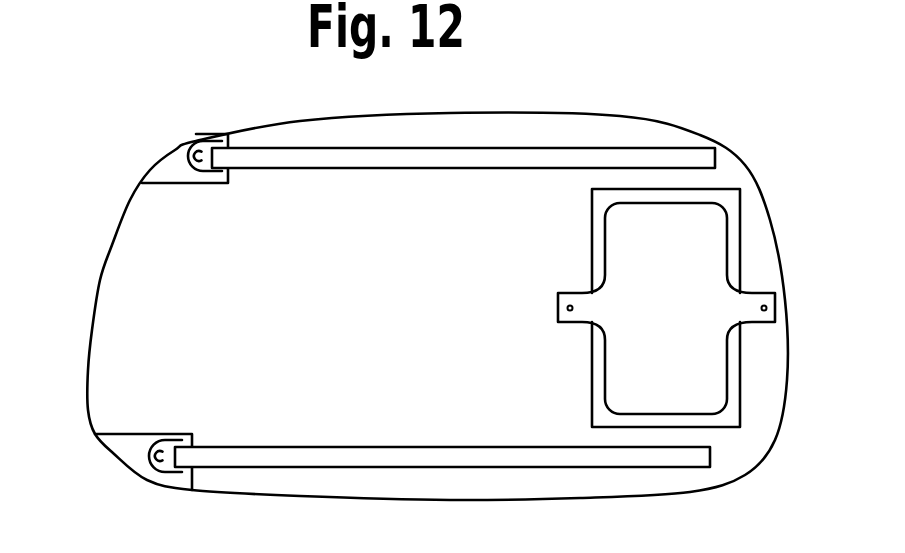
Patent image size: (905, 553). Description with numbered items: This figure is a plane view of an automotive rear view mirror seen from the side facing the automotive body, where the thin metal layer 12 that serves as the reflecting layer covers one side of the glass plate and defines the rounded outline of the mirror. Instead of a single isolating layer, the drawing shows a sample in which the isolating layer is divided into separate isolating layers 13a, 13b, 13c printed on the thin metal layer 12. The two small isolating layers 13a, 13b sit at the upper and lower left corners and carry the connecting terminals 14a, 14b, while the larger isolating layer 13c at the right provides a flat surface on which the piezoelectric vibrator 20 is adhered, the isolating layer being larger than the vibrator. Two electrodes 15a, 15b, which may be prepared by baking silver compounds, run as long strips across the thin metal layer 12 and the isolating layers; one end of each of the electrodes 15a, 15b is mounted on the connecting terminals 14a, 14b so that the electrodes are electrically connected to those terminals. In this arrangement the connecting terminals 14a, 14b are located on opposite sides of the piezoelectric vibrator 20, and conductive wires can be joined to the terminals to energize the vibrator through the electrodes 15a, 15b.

The thin metal layer 12 is at (128, 272).
The isolating layer 13a is at (128, 452).
The isolating layer 13b is at (157, 173).
The isolating layer 13c is at (737, 400).
The connecting terminal 14a is at (165, 463).
The connecting terminal 14b is at (203, 142).
The electrode 15a is at (552, 462).
The electrode 15b is at (571, 157).
The piezoelectric vibrator 20 is at (734, 263).